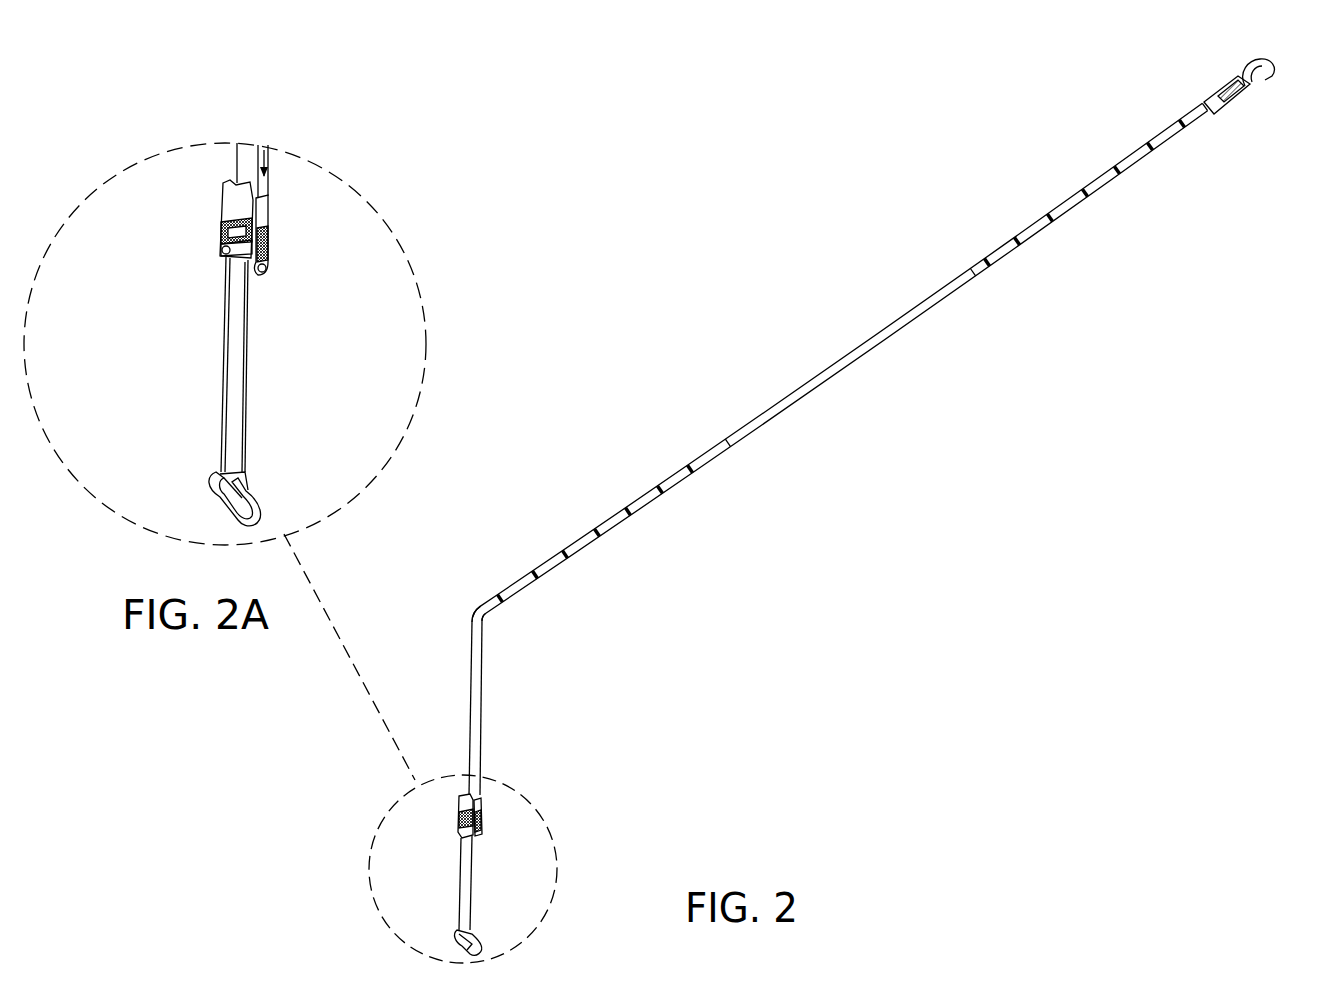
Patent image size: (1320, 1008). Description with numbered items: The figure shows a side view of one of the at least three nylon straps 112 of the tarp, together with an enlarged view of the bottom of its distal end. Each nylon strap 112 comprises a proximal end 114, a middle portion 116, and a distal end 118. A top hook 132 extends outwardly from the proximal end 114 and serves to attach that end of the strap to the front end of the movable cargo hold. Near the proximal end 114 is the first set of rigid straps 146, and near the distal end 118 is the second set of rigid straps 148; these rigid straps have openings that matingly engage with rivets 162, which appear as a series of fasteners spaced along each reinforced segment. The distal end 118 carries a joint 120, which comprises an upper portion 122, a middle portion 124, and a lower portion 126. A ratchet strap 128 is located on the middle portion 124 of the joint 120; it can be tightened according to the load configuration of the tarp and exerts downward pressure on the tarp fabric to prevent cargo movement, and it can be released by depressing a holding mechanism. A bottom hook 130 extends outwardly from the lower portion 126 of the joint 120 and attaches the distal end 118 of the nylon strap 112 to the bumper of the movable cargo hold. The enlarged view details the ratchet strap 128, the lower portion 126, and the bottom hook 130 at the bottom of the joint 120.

In FIG. 2, the nylon strap 112 is at (886, 336).
In FIG. 2, the proximal end 114 is at (1240, 88).
In FIG. 2, the middle portion 116 is at (822, 394).
In FIG. 2, the distal end 118 is at (475, 792).
In FIG. 2, the joint 120 is at (492, 621).
In FIG. 2, the upper portion 122 is at (477, 661).
In FIG. 2, the middle portion 124 is at (475, 862).
In FIG. 2A, the middle portion 124 is at (223, 337).
In FIG. 2, the lower portion 126 is at (462, 878).
In FIG. 2A, the lower portion 126 is at (232, 340).
In FIG. 2, the ratchet strap 128 is at (478, 812).
In FIG. 2A, the ratchet strap 128 is at (266, 228).
In FIG. 2, the bottom hook 130 is at (455, 946).
In FIG. 2A, the bottom hook 130 is at (222, 497).
In FIG. 2, the top hook 132 is at (1262, 58).
In FIG. 2, the first set of rigid straps 146 is at (1010, 254).
In FIG. 2, the second set of rigid straps 148 is at (875, 369).
In FIG. 2, the rivet 162 is at (670, 498).